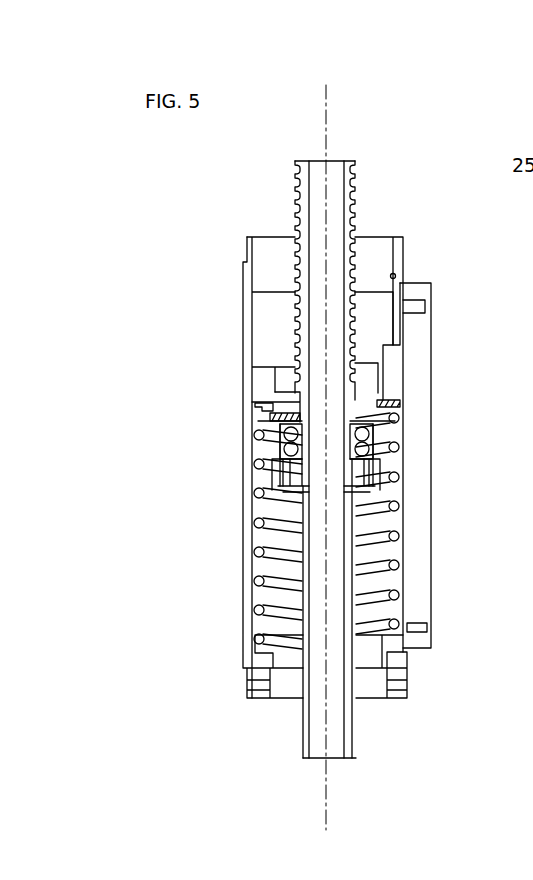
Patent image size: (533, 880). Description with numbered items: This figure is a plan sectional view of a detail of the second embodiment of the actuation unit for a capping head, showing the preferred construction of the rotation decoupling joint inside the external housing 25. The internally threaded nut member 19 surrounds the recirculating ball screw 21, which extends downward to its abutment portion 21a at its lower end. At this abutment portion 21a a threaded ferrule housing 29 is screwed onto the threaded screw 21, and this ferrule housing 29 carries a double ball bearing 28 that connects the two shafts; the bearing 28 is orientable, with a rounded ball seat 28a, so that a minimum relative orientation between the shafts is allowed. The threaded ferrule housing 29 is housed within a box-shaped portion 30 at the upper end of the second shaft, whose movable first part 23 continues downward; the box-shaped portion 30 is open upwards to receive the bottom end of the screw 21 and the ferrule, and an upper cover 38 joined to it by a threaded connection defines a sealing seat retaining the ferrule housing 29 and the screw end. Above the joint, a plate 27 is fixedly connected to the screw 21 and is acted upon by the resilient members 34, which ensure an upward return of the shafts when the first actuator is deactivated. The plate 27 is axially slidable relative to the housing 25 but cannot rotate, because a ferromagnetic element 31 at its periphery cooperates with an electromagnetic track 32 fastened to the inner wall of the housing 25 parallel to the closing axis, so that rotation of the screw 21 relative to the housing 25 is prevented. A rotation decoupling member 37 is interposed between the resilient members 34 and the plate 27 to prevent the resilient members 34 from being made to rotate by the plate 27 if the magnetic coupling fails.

The nut member 19 is at (272, 327).
The recirculating ball screw 21 is at (300, 240).
The abutment portion 21a is at (363, 477).
The movable first part 23 is at (352, 723).
The housing 25 is at (243, 578).
The plate 27 is at (265, 380).
The double ball bearing 28 is at (360, 445).
The ball seat 28a is at (293, 442).
The threaded ferrule housing 29 is at (290, 432).
The box-shaped portion 30 is at (285, 505).
The ferromagnetic element 31 is at (391, 383).
The electromagnetic track 32 is at (420, 390).
The resilient members 34 is at (380, 584).
The rotation decoupling member 37 is at (290, 412).
The upper cover 38 is at (380, 435).